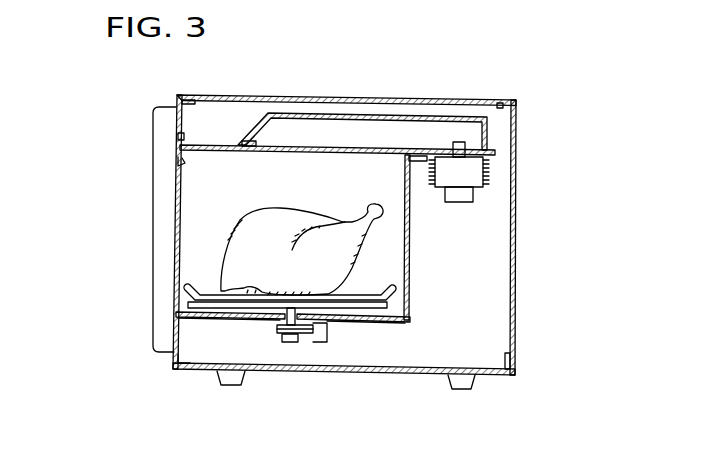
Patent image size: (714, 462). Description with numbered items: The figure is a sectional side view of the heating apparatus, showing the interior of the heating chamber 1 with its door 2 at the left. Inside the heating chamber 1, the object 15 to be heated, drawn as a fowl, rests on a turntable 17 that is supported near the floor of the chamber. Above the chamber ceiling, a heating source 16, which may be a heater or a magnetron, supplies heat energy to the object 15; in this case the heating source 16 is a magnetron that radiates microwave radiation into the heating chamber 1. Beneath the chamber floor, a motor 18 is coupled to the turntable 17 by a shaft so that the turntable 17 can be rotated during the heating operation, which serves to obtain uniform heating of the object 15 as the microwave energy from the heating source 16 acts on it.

The heating chamber 1 is at (190, 213).
The door 2 is at (162, 305).
The object to be heated 15 is at (343, 275).
The heating source 16 is at (463, 202).
The turntable 17 is at (370, 303).
The motor 18 is at (278, 333).